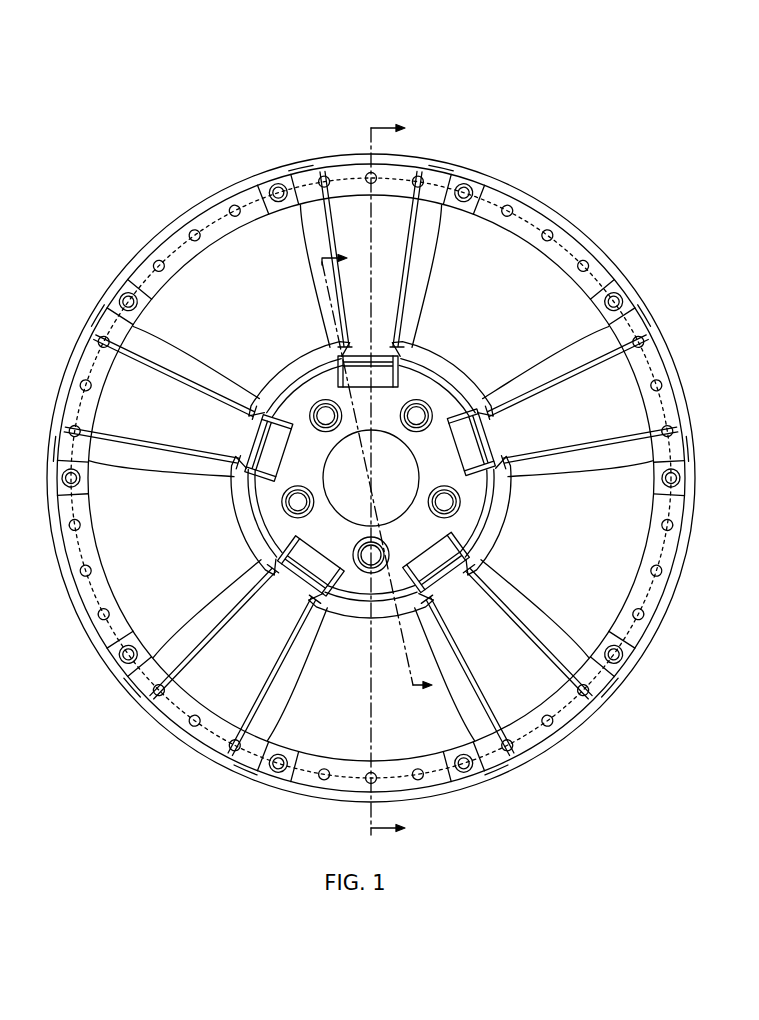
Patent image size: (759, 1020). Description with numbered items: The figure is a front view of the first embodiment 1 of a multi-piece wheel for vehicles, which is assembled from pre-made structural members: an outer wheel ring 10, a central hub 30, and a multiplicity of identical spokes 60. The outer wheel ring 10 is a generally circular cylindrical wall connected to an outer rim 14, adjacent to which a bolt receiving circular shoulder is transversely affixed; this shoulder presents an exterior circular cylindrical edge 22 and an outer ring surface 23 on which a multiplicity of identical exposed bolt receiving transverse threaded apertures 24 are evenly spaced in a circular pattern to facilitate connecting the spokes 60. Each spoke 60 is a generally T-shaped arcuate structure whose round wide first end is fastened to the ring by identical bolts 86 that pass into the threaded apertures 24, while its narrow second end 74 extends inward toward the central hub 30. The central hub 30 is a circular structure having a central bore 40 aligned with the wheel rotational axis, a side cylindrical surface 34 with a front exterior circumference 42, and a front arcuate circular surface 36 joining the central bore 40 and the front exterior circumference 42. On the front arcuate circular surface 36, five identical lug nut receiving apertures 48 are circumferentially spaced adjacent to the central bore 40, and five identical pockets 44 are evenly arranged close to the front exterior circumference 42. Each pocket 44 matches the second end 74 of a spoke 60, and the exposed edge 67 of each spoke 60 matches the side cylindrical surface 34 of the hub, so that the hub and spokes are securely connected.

The first embodiment of the multi-piece wheel 1 is at (95, 136).
The outer wheel ring 10 is at (199, 274).
The outer rim 14 is at (193, 216).
The exterior circular cylindrical edge 22 is at (249, 225).
The outer ring surface 23 is at (533, 213).
The bolt receiving transverse threaded apertures 24 is at (231, 205).
The central hub 30 is at (462, 357).
The side cylindrical surface 34 is at (500, 537).
The front arcuate circular surface 36 is at (394, 542).
The central bore 40 is at (332, 499).
The front exterior circumference 42 is at (235, 514).
The pockets 44 is at (328, 366).
The lug nut receiving apertures 48 is at (421, 415).
The spokes 60 is at (442, 275).
The exposed edge 67 is at (483, 560).
The second end of the spoke 74 is at (381, 378).
The bolts 86 is at (272, 185).